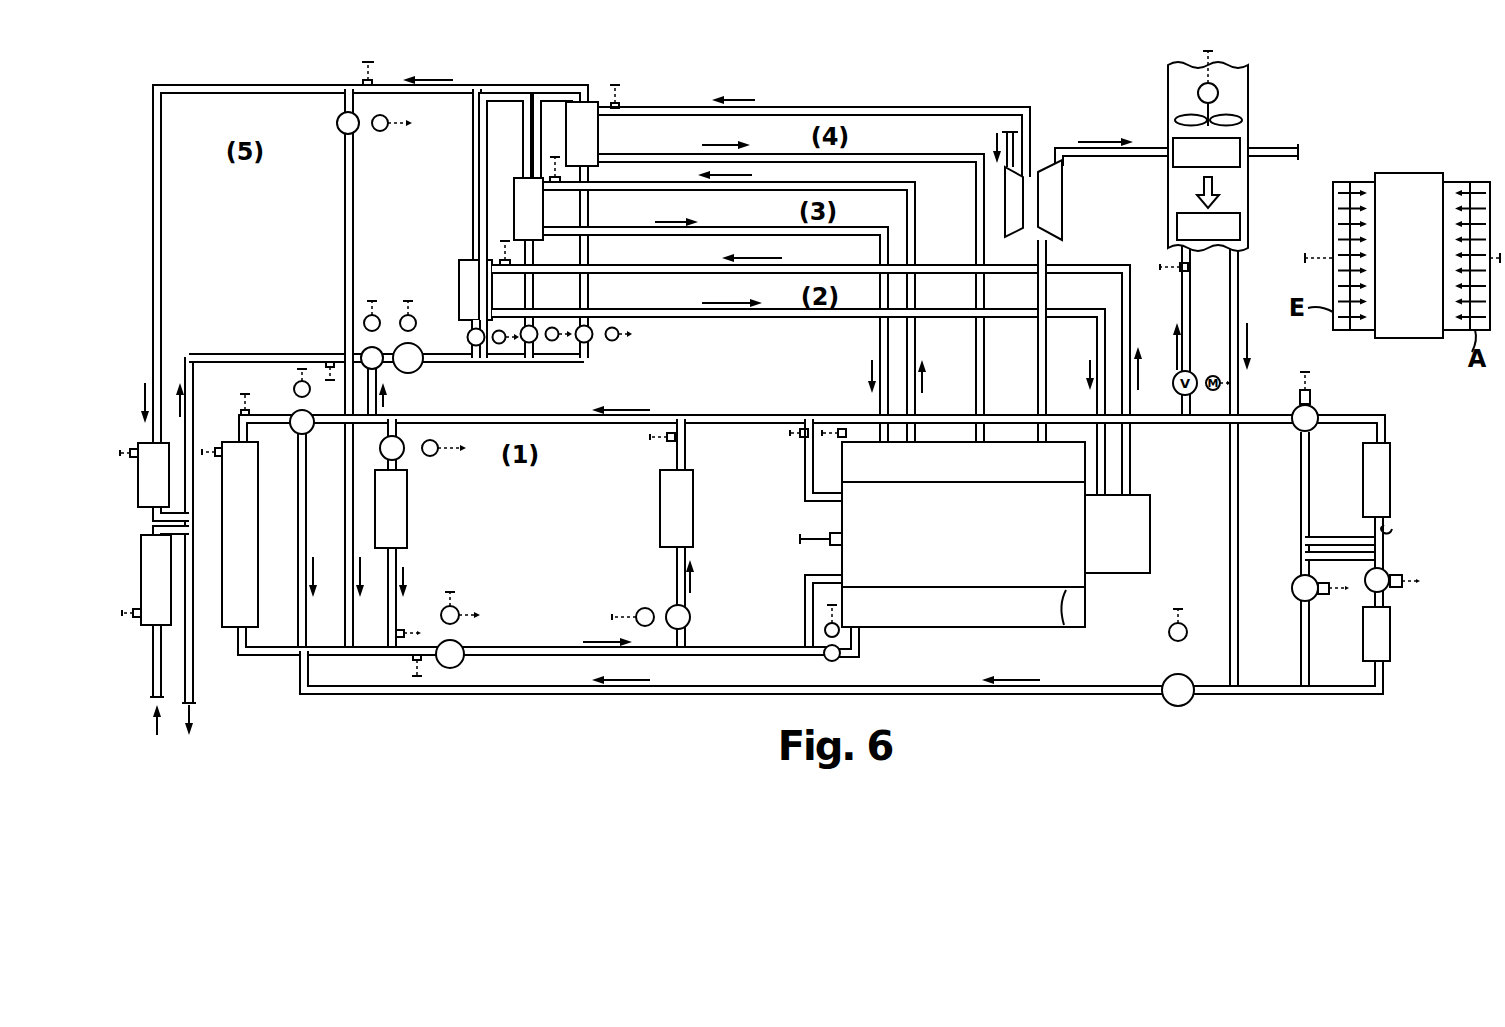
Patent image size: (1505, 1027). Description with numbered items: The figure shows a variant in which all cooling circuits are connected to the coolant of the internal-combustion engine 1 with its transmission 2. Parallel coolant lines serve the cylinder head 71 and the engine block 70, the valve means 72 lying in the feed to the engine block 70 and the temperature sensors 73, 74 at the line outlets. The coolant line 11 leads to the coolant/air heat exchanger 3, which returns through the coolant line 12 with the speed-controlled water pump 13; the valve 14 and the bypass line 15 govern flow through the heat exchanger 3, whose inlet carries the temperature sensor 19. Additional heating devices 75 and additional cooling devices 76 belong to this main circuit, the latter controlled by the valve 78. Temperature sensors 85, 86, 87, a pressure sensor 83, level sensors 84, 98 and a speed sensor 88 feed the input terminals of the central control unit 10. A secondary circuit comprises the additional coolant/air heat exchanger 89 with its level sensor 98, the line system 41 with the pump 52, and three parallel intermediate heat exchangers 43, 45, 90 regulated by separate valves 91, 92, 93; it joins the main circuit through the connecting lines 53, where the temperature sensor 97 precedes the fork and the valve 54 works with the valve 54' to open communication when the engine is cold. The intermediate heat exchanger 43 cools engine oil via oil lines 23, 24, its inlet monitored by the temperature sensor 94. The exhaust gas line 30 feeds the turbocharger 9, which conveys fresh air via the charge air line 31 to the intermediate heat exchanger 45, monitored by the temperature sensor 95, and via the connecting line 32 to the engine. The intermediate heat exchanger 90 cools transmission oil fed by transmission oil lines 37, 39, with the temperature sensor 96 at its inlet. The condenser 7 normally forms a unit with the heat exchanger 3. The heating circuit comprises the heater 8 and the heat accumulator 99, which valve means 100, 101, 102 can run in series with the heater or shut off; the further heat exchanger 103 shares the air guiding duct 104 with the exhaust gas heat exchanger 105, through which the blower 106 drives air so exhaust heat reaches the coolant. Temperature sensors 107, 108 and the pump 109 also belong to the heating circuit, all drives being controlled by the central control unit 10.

The internal-combustion engine 1 is at (1086, 620).
The transmission 2 is at (1136, 575).
The heat exchanger 3 is at (258, 512).
The condenser 7 is at (171, 588).
The heater 8 is at (1391, 636).
The exhaust gas turbocharger 9 is at (1050, 190).
The central control unit 10 is at (1400, 192).
The coolant line 11 is at (581, 428).
The coolant line 12 is at (550, 647).
The water pump 13 is at (466, 646).
The valve 14 is at (292, 432).
The bypass line 15 is at (308, 452).
The temperature sensor 19 is at (329, 353).
The oil line 23 is at (744, 192).
The oil line 24 is at (736, 228).
The exhaust gas line 30 is at (1046, 346).
The charge air line 31 is at (795, 106).
The connecting line 32 is at (763, 153).
The transmission oil line 37 is at (656, 276).
The transmission oil line 39 is at (762, 320).
The line system 41 is at (196, 94).
The intermediate heat exchanger 43 is at (522, 178).
The intermediate heat exchanger 45 is at (592, 102).
The pump 52 is at (418, 347).
The connecting line 53 is at (355, 231).
The valve 54 is at (350, 123).
The valve 54' is at (383, 314).
The engine block 70 is at (994, 627).
The cylinder head 71 is at (963, 574).
The valve means 72 is at (841, 658).
The temperature sensor 73 is at (801, 442).
The temperature sensor 74 is at (841, 426).
The additional heating device 75 is at (408, 513).
The additional cooling device 76 is at (694, 510).
The valve 78 is at (692, 621).
The pressure sensor 83 is at (249, 410).
The level sensor 84 is at (212, 447).
The temperature sensor 85 is at (405, 630).
The temperature sensor 86 is at (410, 661).
The temperature sensor 87 is at (664, 442).
The speed sensor 88 is at (822, 548).
The additional heat exchanger 89 is at (166, 512).
The intermediate heat exchanger 90 is at (462, 276).
The valve 91 is at (470, 345).
The valve 92 is at (524, 343).
The valve 93 is at (578, 343).
The temperature sensor 94 is at (553, 176).
The temperature sensor 95 is at (621, 100).
The temperature sensor 96 is at (503, 258).
The temperature sensor 97 is at (364, 81).
The level sensor 98 is at (150, 472).
The heat accumulator 99 is at (1391, 490).
The valve means 100 is at (1316, 408).
The valve means 101 is at (1293, 594).
The valve means 102 is at (1398, 572).
The heat exchanger 103 is at (1238, 234).
The air guiding duct 104 is at (1248, 197).
The exhaust gas heat exchanger 105 is at (1232, 148).
The blower 106 is at (1220, 100).
The temperature sensor 107 is at (1392, 530).
The temperature sensor 108 is at (1176, 272).
The pump 109 is at (1192, 677).